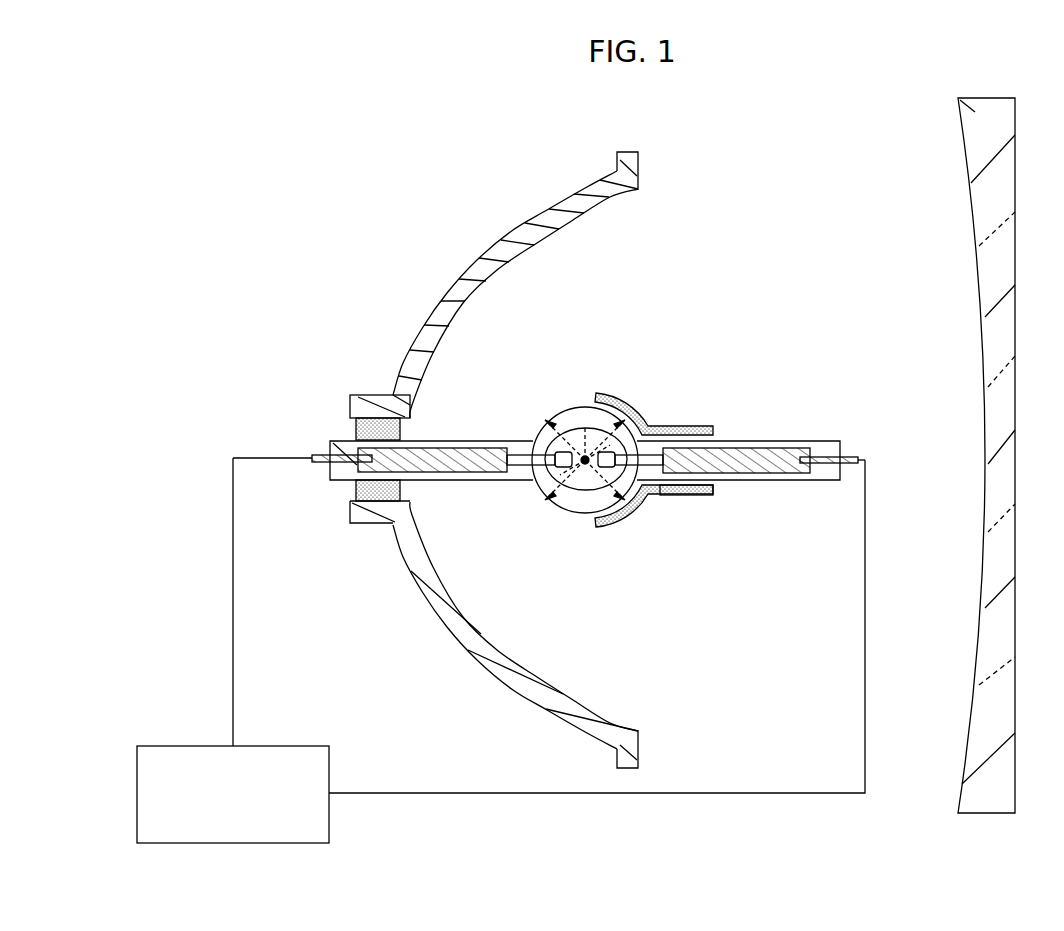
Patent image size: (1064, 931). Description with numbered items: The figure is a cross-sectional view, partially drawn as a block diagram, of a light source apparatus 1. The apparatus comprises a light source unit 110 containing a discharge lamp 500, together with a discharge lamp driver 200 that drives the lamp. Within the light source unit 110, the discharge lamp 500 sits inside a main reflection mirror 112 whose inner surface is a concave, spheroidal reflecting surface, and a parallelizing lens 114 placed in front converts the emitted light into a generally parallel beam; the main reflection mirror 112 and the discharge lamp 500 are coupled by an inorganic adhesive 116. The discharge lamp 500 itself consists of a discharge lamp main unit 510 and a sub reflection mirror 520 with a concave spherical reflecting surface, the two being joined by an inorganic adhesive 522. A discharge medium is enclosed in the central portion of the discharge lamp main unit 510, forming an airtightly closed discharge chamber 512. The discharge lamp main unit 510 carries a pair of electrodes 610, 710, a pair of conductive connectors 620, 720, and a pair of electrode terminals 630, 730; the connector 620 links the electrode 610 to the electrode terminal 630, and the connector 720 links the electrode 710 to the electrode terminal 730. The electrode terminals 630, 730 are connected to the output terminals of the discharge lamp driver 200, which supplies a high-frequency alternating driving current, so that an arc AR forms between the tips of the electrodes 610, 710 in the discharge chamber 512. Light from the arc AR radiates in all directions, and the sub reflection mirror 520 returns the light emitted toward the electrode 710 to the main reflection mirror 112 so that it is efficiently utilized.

The light source apparatus 1 is at (851, 105).
The light source unit 110 is at (394, 122).
The main reflection mirror 112 is at (540, 221).
The parallelizing lens 114 is at (985, 147).
The inorganic adhesive 116 is at (352, 426).
The discharge lamp driver 200 is at (305, 746).
The discharge lamp 500 is at (738, 305).
The discharge lamp main unit 510 is at (566, 414).
The discharge chamber 512 is at (580, 500).
The sub reflection mirror 520 is at (634, 516).
The inorganic adhesive 522 is at (713, 490).
The electrode 610 is at (548, 488).
The conductive connector 620 is at (472, 455).
The electrode terminal 630 is at (312, 457).
The electrode 710 is at (644, 423).
The conductive connector 720 is at (757, 442).
The electrode terminal 730 is at (826, 456).
The arc AR is at (584, 428).